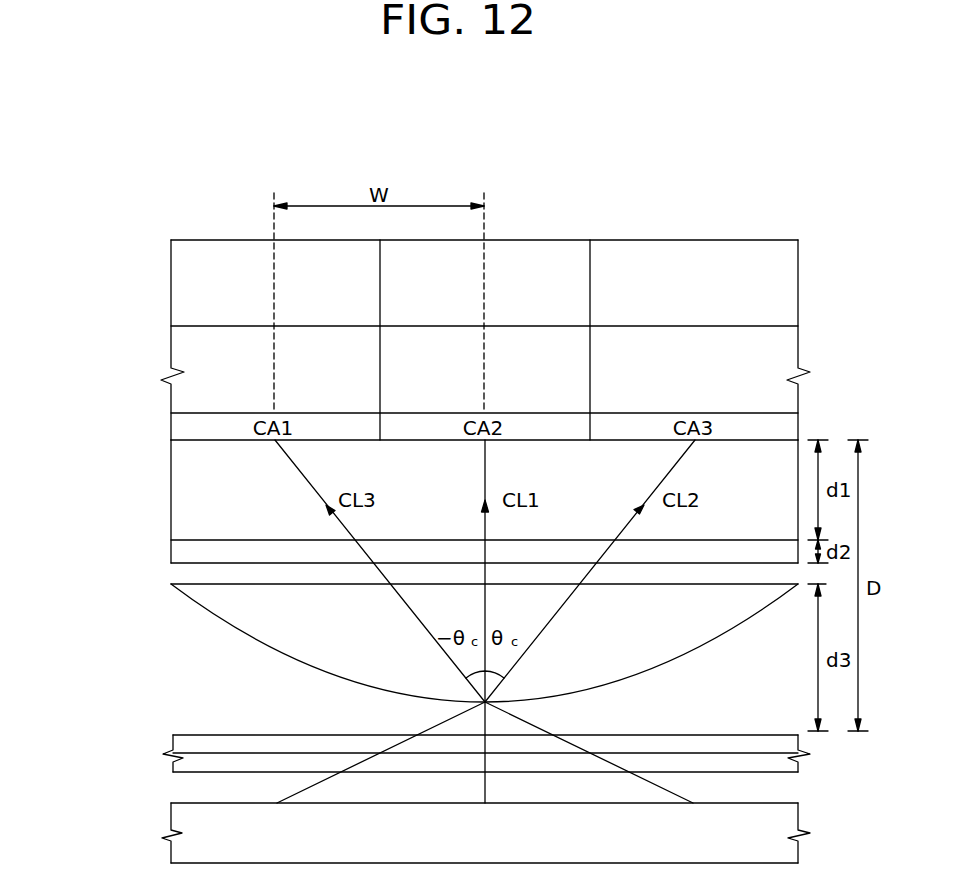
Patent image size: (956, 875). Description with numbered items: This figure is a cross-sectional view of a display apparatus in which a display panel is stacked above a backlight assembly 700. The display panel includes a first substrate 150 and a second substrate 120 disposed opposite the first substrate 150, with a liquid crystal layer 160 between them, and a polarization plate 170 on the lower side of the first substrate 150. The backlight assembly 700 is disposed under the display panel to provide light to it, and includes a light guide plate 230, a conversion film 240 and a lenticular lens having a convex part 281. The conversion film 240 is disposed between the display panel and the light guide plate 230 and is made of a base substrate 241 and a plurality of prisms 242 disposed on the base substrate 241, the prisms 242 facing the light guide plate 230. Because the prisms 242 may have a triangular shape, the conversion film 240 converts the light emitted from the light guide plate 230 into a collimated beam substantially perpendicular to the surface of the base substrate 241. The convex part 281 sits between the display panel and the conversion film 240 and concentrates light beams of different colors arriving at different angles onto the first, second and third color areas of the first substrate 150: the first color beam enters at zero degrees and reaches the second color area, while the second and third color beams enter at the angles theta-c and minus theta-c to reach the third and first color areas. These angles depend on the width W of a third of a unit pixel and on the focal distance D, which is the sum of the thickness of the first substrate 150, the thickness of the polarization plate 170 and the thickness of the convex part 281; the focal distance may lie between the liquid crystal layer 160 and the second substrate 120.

The second substrate 120 is at (178, 296).
The liquid crystal layer 160 is at (178, 351).
The first substrate 150 is at (178, 494).
The polarization plate 170 is at (178, 550).
The backlight assembly 700 is at (52, 688).
The convex part 281 is at (234, 621).
The conversion film 240 is at (108, 720).
The base substrate 241 is at (182, 741).
The prisms 242 is at (182, 765).
The light guide plate 230 is at (182, 813).